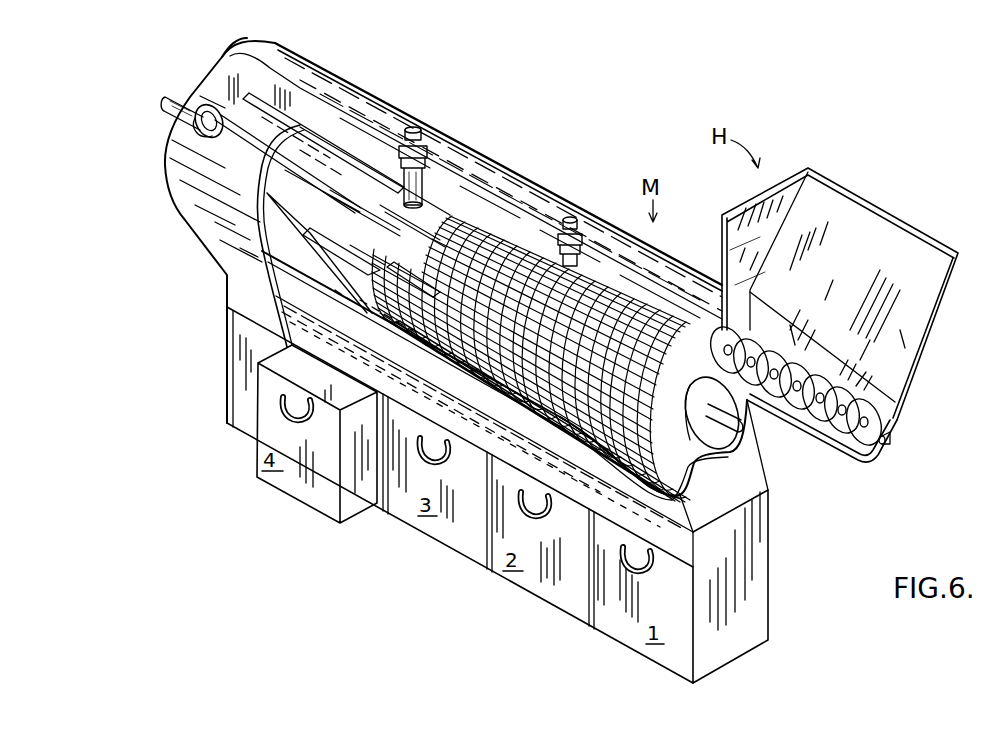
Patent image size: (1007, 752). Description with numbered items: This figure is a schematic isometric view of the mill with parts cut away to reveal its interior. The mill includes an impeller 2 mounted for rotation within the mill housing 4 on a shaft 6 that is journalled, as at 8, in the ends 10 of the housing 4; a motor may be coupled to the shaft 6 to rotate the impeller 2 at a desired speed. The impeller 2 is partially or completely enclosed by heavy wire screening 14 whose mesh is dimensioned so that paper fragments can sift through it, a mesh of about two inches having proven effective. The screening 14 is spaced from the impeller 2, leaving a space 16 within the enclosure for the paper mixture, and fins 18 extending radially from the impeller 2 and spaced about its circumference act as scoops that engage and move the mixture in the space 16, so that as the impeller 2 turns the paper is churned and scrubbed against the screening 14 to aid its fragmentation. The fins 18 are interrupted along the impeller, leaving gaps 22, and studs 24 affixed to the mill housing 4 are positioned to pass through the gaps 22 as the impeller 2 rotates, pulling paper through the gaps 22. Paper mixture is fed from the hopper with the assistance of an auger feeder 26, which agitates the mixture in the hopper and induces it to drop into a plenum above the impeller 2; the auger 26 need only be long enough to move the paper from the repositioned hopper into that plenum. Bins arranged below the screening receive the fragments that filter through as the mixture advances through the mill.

The impeller 2 is at (700, 430).
The mill housing 4 is at (512, 188).
The shaft 6 is at (165, 103).
The journal 8 is at (200, 128).
The ends of the housing 10 is at (247, 47).
The heavy wire screening 14 is at (522, 394).
The space 16 is at (684, 463).
The fins 18 is at (247, 143).
The gaps 22 is at (373, 313).
The studs 24 is at (423, 172).
The auger feeder 26 is at (815, 358).